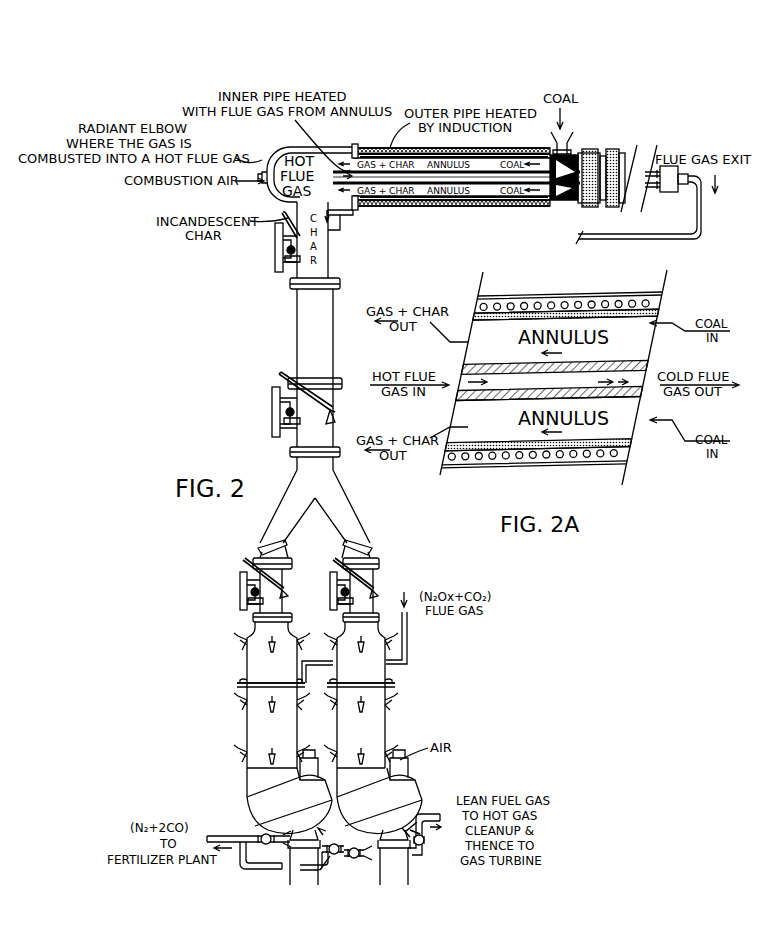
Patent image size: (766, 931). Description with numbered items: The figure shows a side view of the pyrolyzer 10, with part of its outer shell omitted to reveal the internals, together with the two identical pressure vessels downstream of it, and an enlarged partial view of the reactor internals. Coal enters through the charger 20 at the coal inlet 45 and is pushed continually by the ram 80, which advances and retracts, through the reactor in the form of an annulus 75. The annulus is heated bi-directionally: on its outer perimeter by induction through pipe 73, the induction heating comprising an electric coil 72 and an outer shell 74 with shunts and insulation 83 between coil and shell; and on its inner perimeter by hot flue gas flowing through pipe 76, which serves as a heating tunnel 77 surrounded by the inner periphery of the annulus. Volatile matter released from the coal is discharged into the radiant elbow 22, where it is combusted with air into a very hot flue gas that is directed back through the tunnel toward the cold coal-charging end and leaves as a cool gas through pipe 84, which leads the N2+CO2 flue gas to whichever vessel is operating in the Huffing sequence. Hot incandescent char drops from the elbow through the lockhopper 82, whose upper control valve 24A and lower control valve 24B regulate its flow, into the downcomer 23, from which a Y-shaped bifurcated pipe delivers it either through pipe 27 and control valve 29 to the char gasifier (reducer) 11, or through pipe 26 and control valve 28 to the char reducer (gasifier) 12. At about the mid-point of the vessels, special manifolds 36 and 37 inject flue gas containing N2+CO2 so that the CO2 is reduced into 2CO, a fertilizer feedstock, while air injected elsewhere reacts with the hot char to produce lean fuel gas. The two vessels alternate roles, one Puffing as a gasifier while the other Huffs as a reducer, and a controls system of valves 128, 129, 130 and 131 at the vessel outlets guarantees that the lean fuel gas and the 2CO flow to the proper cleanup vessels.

In FIG. 2, the pyrolyzer 10 is at (426, 262).
In FIG. 2, the char gasifier (reducer) 11 is at (245, 714).
In FIG. 2, the char reducer (gasifier) 12 is at (392, 716).
In FIG. 2, the charger 20 is at (671, 192).
In FIG. 2, the radiant elbow 22 is at (292, 158).
In FIG. 2, the downcomer 23 is at (327, 562).
In FIG. 2, the upper control valve 24A is at (280, 250).
In FIG. 2, the lower control valve 24B is at (280, 410).
In FIG. 2, the pipe 26 is at (349, 512).
In FIG. 2, the pipe 27 is at (277, 512).
In FIG. 2, the control valve 28 is at (372, 604).
In FIG. 2, the control valve 29 is at (250, 585).
In FIG. 2, the manifold 36 is at (400, 690).
In FIG. 2, the manifold 37 is at (238, 684).
In FIG. 2, the coal feed inlet 45 is at (566, 135).
In FIG. 2, the electric coil 72 is at (506, 148).
In FIG. 2A, the electric coil 72 is at (580, 298).
In FIG. 2, the pipe 73 is at (376, 157).
In FIG. 2A, the pipe 73 is at (484, 322).
In FIG. 2, the outer shell 74 is at (425, 207).
In FIG. 2A, the outer shell 74 is at (505, 302).
In FIG. 2A, the annulus 75 is at (615, 330).
In FIG. 2A, the pipe 76 is at (508, 366).
In FIG. 2A, the tunnel 77 is at (614, 378).
In FIG. 2, the ram 80 is at (566, 200).
In FIG. 2, the lockhopper 82 is at (297, 332).
In FIG. 2A, the shunts and insulation 83 is at (538, 306).
In FIG. 2, the pipe 84 is at (704, 212).
In FIG. 2, the valve 128 is at (418, 846).
In FIG. 2, the valve 129 is at (262, 838).
In FIG. 2, the valve 130 is at (338, 836).
In FIG. 2, the valve 131 is at (358, 866).